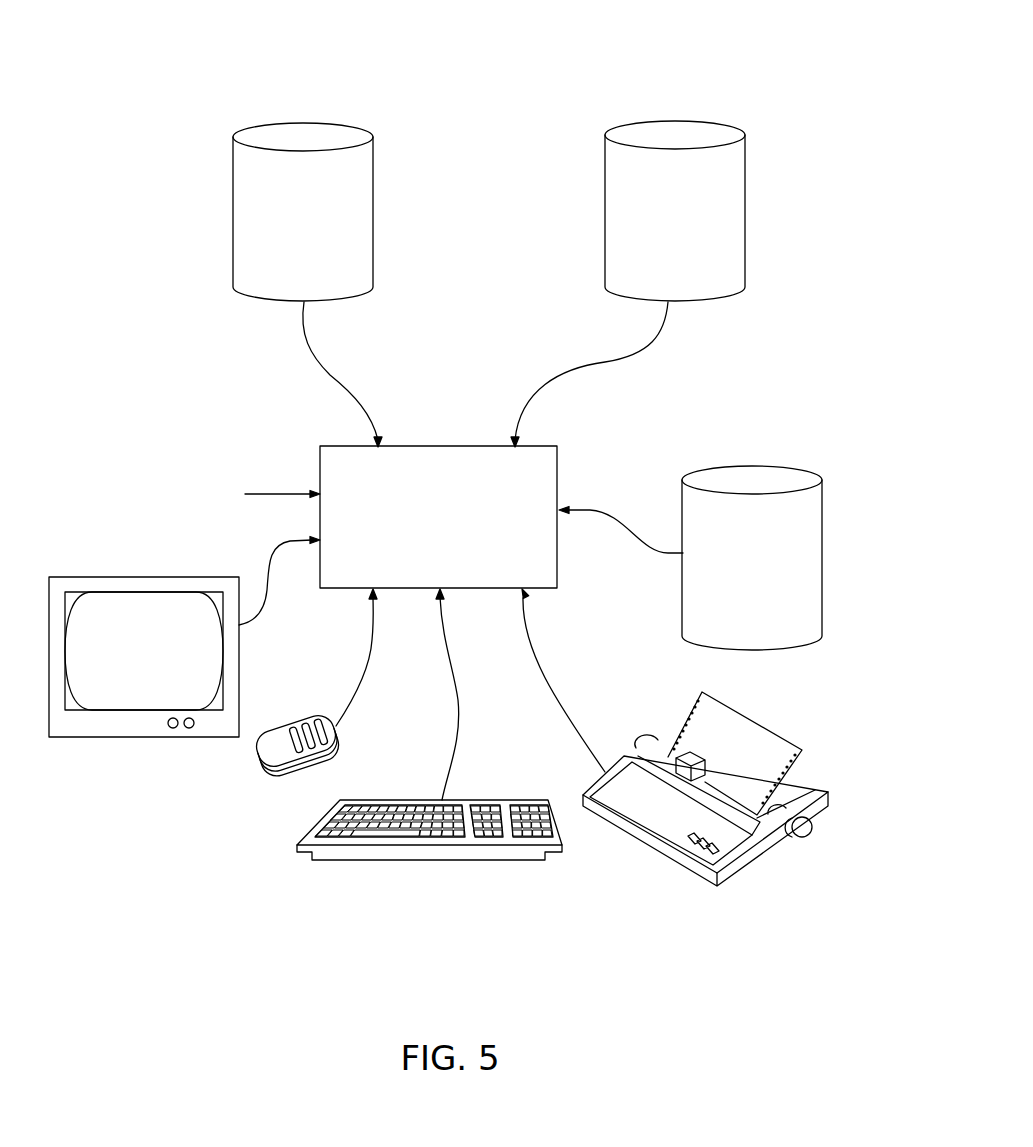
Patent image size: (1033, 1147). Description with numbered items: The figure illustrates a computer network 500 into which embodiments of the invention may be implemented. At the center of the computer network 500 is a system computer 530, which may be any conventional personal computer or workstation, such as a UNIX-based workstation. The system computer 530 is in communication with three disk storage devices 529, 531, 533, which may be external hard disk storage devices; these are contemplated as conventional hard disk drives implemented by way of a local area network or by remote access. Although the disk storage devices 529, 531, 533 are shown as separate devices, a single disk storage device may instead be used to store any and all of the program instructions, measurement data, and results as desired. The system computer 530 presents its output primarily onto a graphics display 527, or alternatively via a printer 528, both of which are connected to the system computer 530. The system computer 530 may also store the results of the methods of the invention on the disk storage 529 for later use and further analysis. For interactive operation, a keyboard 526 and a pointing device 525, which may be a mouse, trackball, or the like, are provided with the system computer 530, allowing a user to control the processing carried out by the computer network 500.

The computer network 500 is at (237, 45).
The pointing device 525 is at (263, 770).
The keyboard 526 is at (436, 860).
The graphics display 527 is at (118, 739).
The printer 528 is at (771, 853).
The disk storage device 529 is at (753, 465).
The system computer 530 is at (436, 446).
The disk storage device 531 is at (677, 122).
The disk storage device 533 is at (300, 122).